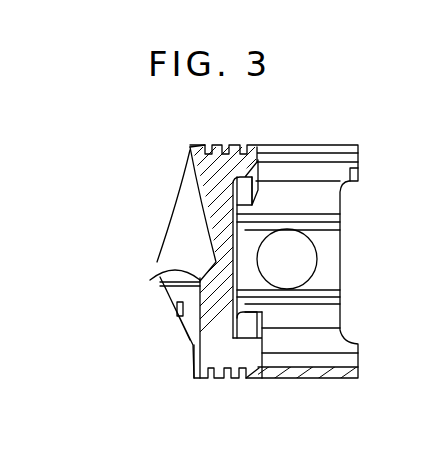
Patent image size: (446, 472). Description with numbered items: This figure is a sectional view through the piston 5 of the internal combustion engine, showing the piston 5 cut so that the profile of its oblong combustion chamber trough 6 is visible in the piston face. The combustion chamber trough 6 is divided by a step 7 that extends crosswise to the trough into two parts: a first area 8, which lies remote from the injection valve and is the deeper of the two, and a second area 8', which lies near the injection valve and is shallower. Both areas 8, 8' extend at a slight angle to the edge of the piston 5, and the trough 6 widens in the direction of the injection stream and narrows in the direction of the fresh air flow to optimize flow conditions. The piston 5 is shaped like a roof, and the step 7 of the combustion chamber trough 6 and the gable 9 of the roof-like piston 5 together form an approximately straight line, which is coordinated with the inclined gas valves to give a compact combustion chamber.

The piston 5 is at (340, 108).
The combustion chamber trough 6 is at (178, 236).
The step 7 is at (150, 306).
The first area 8 is at (164, 177).
The second area 8' is at (155, 346).
The gable 9 is at (158, 272).